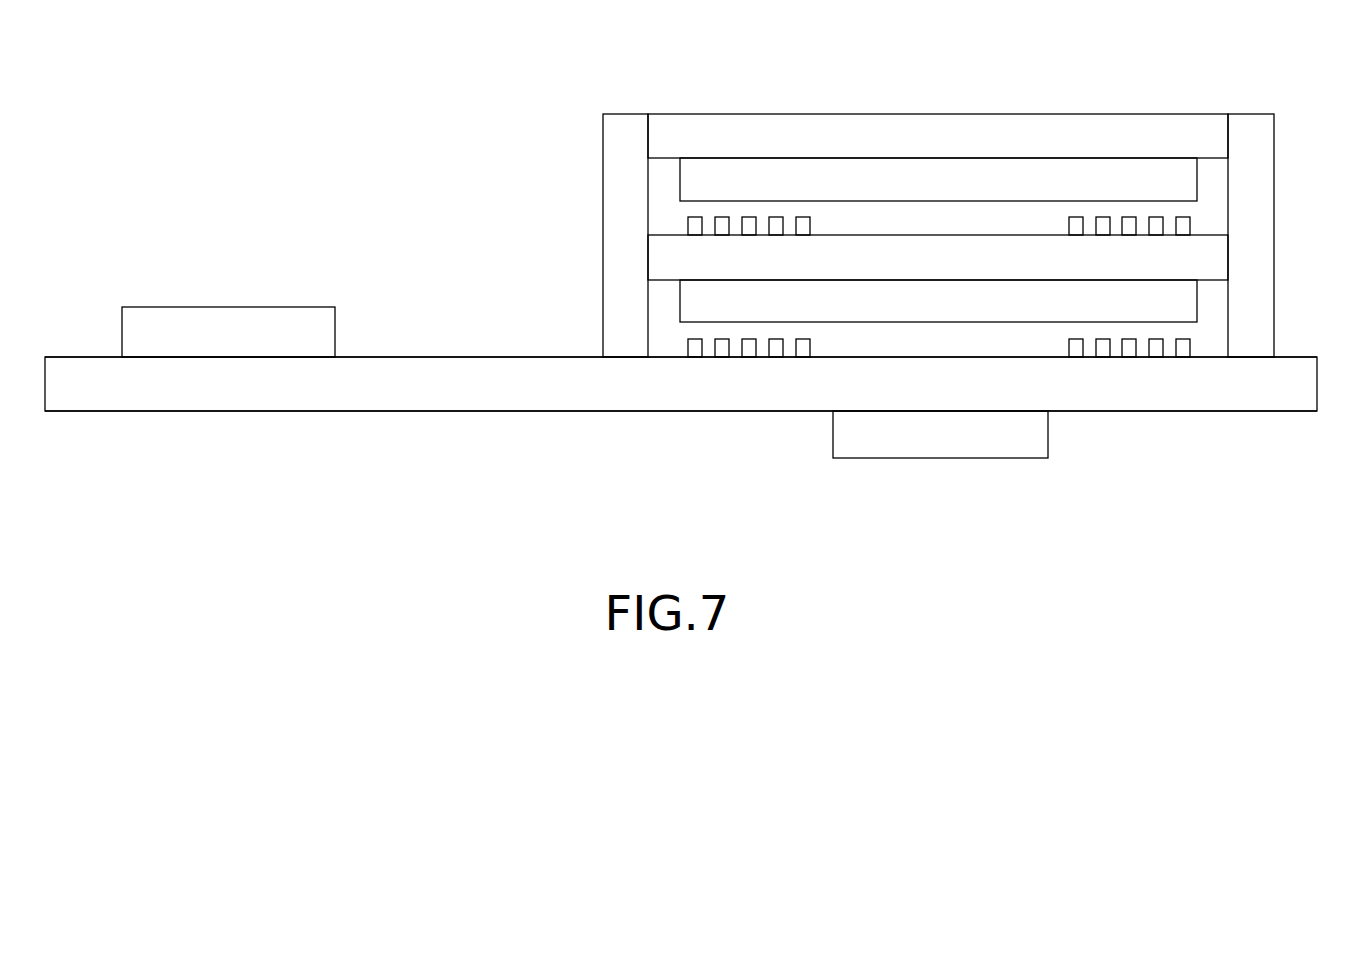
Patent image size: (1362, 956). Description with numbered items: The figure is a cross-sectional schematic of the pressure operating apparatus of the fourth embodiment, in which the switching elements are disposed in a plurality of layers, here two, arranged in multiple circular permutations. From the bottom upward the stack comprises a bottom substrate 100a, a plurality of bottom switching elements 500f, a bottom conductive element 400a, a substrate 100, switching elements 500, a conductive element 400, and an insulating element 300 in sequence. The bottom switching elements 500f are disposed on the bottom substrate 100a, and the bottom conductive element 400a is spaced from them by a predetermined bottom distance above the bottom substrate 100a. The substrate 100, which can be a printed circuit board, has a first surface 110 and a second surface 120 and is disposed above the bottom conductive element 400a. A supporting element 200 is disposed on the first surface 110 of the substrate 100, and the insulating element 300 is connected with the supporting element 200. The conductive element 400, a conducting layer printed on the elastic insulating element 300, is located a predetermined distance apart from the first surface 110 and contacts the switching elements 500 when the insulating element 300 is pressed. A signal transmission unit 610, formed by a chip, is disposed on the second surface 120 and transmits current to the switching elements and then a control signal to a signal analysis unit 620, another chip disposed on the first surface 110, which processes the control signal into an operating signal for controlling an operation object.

The substrate 100 is at (668, 262).
The bottom substrate 100a is at (225, 395).
The first surface 110 is at (1296, 357).
The second surface 120 is at (1286, 411).
The supporting element 200 is at (617, 170).
The insulating element 300 is at (925, 130).
The conductive element 400 is at (730, 173).
The bottom conductive element 400a is at (707, 298).
The switching element 500 is at (779, 211).
The bottom switching elements 500f is at (682, 334).
The signal transmission unit 610 is at (905, 440).
The signal analysis unit 620 is at (226, 318).